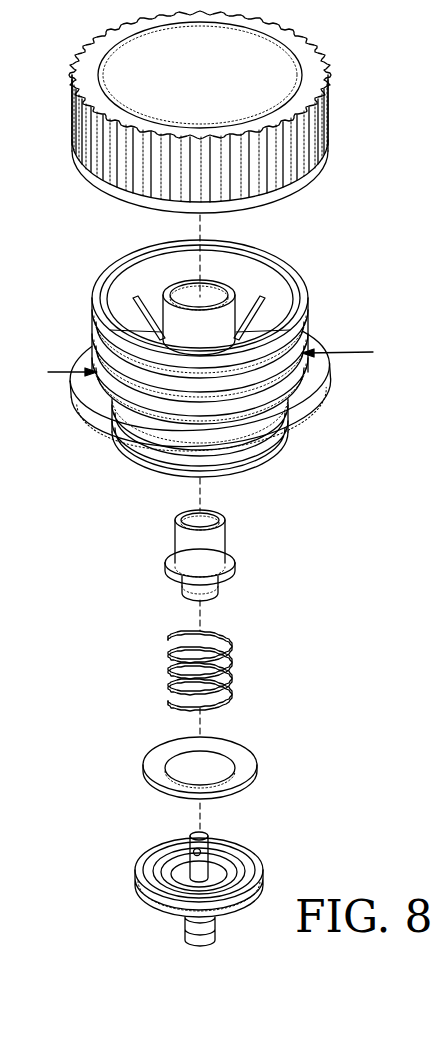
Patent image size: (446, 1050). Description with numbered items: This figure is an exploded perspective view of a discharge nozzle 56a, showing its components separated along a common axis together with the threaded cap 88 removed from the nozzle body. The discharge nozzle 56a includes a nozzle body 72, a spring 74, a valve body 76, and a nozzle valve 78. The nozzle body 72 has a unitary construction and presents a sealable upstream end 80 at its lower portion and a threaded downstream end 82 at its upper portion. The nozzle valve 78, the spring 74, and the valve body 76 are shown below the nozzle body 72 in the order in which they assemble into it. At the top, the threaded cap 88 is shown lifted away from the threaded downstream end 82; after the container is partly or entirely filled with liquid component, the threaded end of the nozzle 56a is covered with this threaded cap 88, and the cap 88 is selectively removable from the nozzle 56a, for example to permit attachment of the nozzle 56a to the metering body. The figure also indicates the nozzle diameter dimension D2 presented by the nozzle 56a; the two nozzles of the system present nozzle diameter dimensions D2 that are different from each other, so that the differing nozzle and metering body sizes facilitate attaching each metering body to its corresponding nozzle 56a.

The threaded cap 88 is at (307, 86).
The nozzle 56a is at (246, 357).
The threaded downstream end 82 is at (305, 303).
The nozzle diameter dimension D2 is at (228, 358).
The nozzle body 72 is at (307, 382).
The sealable upstream end 80 is at (252, 467).
The nozzle valve 78 is at (227, 572).
The spring 74 is at (225, 663).
The valve body 76 is at (257, 860).